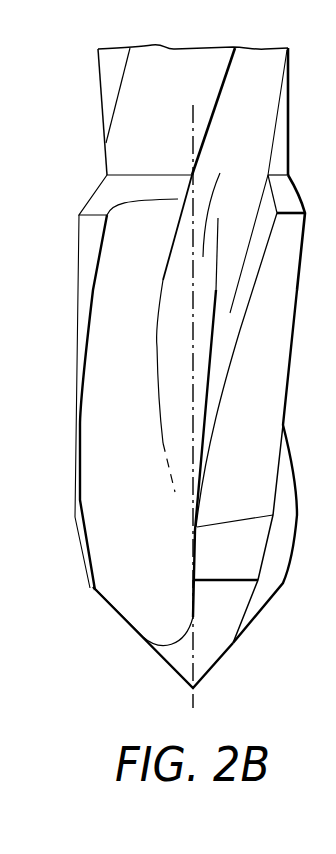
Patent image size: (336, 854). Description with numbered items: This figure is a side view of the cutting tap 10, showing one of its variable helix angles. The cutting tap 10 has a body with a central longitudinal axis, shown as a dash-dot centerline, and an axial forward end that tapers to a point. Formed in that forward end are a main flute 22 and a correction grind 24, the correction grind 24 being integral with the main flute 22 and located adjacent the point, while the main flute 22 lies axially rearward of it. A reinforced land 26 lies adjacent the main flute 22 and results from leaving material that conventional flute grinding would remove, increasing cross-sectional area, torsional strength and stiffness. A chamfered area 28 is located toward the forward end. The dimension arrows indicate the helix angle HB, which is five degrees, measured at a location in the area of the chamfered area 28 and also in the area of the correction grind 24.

The cutting tap 10 is at (70, 142).
The main flute 22 is at (5, 245).
The correction grind 24 is at (128, 577).
The reinforced land 26 is at (115, 274).
The chamfered area 28 is at (242, 563).
The helix angle HB is at (153, 262).